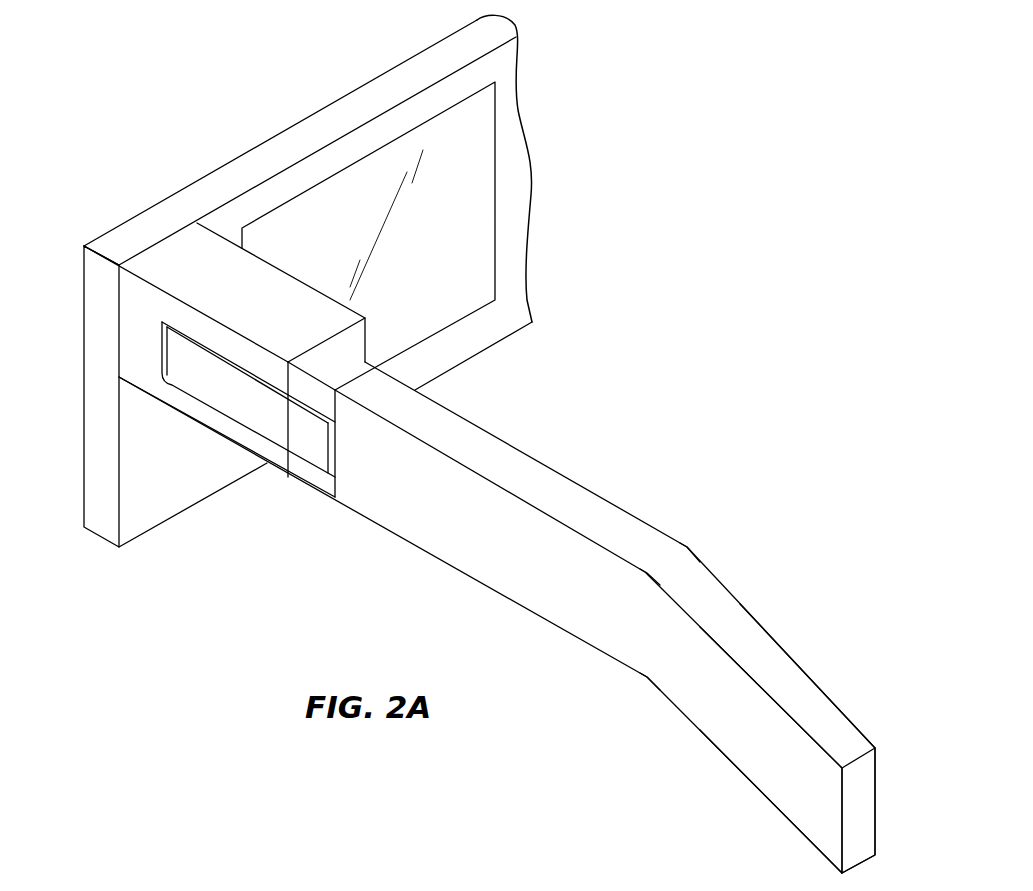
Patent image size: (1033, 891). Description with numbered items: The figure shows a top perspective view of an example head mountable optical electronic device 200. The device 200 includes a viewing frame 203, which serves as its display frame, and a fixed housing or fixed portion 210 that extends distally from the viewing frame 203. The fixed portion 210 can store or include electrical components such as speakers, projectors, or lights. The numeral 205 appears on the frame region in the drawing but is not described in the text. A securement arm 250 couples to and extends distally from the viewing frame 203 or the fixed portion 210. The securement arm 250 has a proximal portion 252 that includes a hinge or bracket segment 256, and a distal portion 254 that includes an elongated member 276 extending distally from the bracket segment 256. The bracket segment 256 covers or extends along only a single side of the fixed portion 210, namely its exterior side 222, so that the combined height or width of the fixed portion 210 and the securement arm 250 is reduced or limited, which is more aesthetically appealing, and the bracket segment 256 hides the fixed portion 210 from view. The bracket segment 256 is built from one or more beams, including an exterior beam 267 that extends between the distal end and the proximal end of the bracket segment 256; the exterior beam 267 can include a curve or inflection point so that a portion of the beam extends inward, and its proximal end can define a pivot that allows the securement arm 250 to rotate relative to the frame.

The optical electronic device 200 is at (242, 106).
The viewing frame 203 is at (483, 41).
The display window 205 is at (480, 200).
The fixed portion 210 is at (348, 303).
The exterior side 222 is at (130, 322).
The exterior beam 267 is at (177, 355).
The proximal portion 252 is at (313, 477).
The bracket segment 256 is at (303, 386).
The securement arm 250 is at (490, 590).
The elongated member 276 is at (595, 510).
The distal portion 254 is at (718, 702).